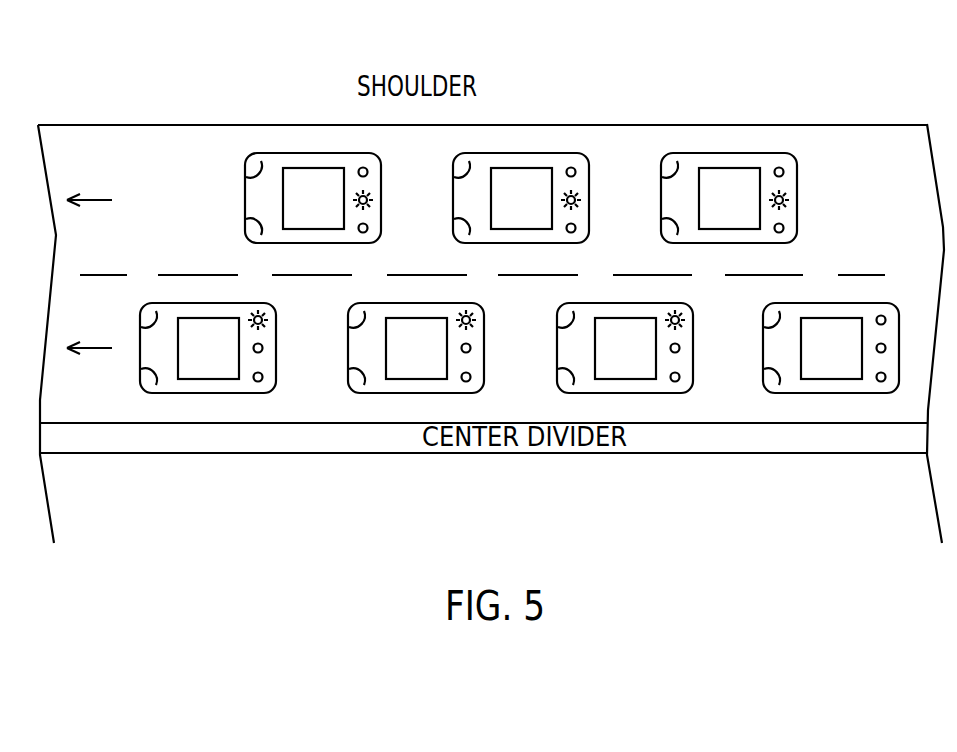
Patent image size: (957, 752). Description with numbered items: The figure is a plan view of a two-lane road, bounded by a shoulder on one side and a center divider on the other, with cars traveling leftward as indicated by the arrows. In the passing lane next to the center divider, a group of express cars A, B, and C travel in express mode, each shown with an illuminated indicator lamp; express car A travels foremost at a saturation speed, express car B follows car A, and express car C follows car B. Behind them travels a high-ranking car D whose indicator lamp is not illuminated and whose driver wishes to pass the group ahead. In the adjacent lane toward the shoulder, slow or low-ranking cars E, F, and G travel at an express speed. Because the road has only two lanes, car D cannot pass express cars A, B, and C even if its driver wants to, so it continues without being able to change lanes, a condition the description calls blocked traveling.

The express car A is at (203, 393).
The express car B is at (394, 393).
The express car C is at (636, 393).
The high-ranking car D is at (827, 393).
The slow car E is at (307, 153).
The slow car F is at (516, 153).
The slow car G is at (725, 153).